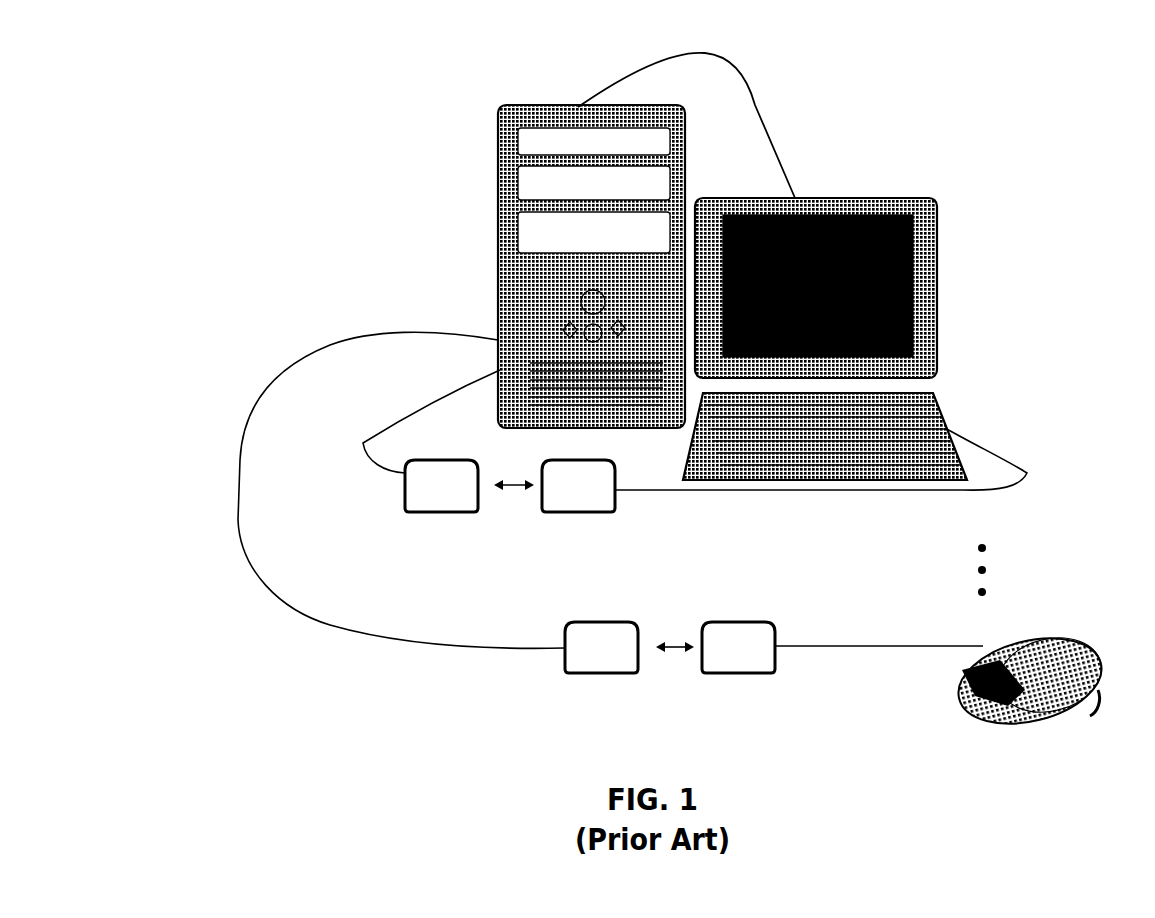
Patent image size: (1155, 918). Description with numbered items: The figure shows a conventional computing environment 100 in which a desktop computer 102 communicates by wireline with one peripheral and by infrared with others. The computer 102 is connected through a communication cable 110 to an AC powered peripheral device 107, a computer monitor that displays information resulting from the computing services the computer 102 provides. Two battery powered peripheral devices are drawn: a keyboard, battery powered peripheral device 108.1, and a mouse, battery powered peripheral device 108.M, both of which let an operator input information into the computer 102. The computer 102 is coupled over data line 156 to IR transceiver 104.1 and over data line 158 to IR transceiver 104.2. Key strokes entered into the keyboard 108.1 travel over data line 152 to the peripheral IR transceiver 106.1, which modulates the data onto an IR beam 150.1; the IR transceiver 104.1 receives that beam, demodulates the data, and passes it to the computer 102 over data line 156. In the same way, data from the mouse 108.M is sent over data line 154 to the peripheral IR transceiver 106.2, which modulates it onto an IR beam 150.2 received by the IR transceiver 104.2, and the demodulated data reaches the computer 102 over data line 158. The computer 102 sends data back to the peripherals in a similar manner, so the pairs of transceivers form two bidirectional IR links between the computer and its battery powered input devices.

The computing environment 100 is at (352, 88).
The computer 102 is at (498, 118).
The communication cable 110 is at (756, 100).
The AC powered peripheral device 107 is at (937, 230).
The battery powered peripheral device 108.1 is at (935, 410).
The battery powered peripheral device 108.M is at (1043, 645).
The data line 152 is at (1025, 478).
The data line 154 is at (862, 648).
The data line 156 is at (363, 443).
The data line 158 is at (256, 380).
The IR transceiver 104.1 is at (445, 514).
The peripheral IR transceiver 106.1 is at (593, 514).
The IR beam 150.1 is at (516, 488).
The IR transceiver 104.2 is at (598, 675).
The peripheral IR transceiver 106.2 is at (752, 675).
The IR beam 150.2 is at (674, 642).